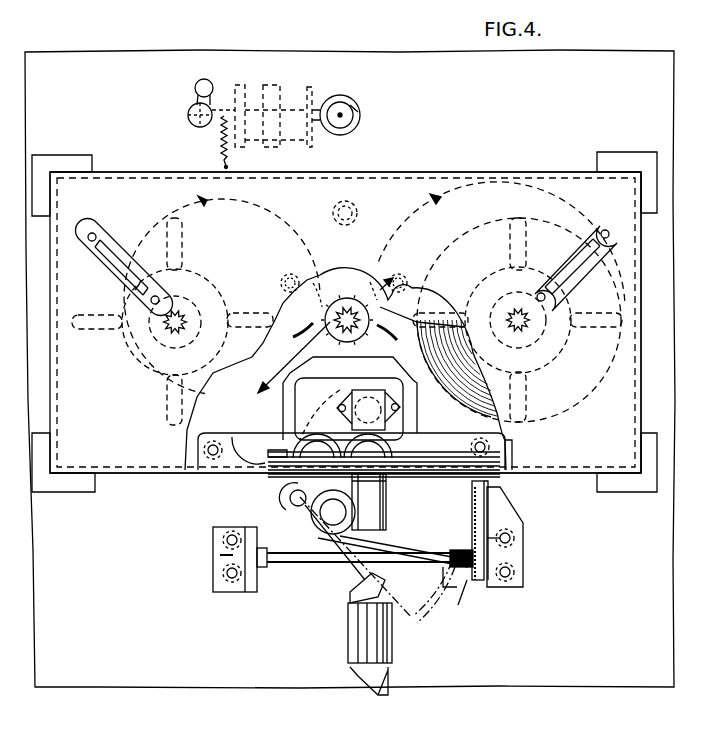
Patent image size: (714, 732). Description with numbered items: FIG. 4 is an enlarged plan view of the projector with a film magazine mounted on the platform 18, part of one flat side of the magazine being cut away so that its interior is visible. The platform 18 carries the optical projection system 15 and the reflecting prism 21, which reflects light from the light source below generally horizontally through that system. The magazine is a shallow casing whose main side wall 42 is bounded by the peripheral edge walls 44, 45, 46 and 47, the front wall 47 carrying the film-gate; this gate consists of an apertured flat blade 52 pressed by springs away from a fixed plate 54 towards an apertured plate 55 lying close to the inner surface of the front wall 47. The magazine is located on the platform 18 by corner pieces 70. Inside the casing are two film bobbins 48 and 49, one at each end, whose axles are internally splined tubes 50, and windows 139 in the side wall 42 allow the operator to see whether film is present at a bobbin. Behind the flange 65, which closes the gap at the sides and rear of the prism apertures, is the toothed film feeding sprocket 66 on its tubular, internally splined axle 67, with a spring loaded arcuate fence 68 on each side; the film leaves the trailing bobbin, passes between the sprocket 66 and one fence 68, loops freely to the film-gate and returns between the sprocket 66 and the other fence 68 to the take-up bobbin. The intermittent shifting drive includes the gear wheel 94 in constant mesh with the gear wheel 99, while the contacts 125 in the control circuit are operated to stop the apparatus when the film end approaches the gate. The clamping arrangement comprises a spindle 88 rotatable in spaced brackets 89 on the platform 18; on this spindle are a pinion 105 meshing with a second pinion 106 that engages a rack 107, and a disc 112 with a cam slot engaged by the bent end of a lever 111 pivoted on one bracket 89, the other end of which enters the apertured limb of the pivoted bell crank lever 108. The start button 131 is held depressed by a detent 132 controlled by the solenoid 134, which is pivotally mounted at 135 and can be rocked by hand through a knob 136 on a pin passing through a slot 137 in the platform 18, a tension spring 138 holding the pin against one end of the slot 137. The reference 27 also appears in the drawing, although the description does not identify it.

The platform 18 is at (127, 56).
The corner pieces 70 is at (66, 159).
The peripheral edge wall 44 is at (55, 369).
The peripheral edge wall 46 is at (643, 400).
The side wall 42 is at (153, 462).
The peripheral edge wall 45 is at (173, 171).
The slot 137 is at (196, 85).
The knob 136 is at (188, 115).
The tension spring 138 is at (222, 150).
The pivot 135 is at (277, 113).
The solenoid 134 is at (321, 93).
The start button 131 is at (358, 113).
The detent 132 is at (338, 135).
The film bobbin 48 is at (148, 357).
The film bobbin 49 is at (538, 337).
The internally splined tubes 50 is at (183, 316).
The windows 139 is at (110, 252).
The flange 65 is at (283, 398).
The tape pack 27 is at (440, 437).
The film feeding sprocket 66 is at (357, 297).
The tubular axle 67 is at (362, 322).
The arcuate fence 68 is at (292, 294).
The apertured flat blade 52 is at (255, 438).
The fixed plate 54 is at (329, 388).
The reflecting prism 21 is at (337, 402).
The front wall 47 is at (257, 470).
The apertured plate 55 is at (215, 468).
The bell crank lever 108 is at (513, 467).
The gear wheel 94 is at (293, 500).
The gear wheel 99 is at (318, 527).
The contacts 125 is at (390, 525).
The optical projection system 15 is at (409, 565).
The spindle 88 is at (293, 557).
The brackets 89 is at (242, 583).
The disc 112 is at (523, 566).
The lever 111 is at (517, 504).
The rack 107 is at (465, 545).
The pinion 105 is at (487, 600).
The second pinion 106 is at (478, 587).